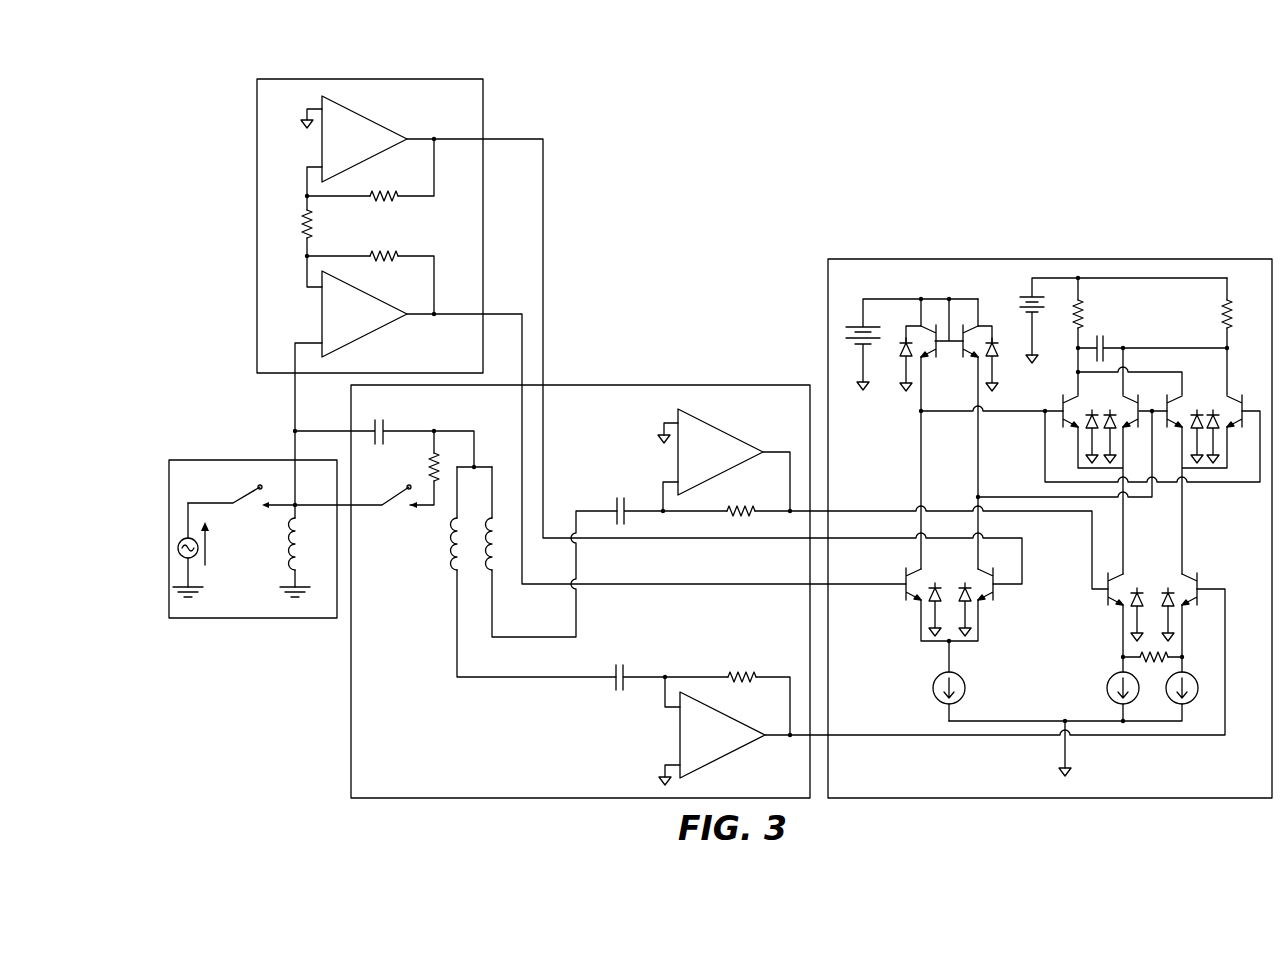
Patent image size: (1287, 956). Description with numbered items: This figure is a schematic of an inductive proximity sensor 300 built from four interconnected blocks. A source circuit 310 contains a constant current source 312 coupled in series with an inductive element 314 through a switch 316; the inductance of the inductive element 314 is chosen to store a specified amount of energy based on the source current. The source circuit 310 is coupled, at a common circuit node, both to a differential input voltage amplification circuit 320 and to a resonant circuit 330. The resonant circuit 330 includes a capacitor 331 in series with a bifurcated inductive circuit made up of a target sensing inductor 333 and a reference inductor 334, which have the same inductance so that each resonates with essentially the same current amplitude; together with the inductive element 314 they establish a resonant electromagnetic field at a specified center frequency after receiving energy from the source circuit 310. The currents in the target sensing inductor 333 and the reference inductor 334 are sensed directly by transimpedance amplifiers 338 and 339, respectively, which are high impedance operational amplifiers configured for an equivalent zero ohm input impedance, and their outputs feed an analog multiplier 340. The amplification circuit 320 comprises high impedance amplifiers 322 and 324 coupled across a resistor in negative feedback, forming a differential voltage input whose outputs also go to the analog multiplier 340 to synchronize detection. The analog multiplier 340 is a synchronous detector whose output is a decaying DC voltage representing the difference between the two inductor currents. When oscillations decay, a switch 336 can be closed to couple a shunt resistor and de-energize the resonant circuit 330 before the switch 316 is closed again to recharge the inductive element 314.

The proximity sensor 300 is at (703, 438).
The source circuit 310 is at (253, 522).
The constant current source 312 is at (172, 550).
The inductive element 314 is at (307, 551).
The switch 316 is at (241, 487).
The differential input voltage amplification circuit 320 is at (350, 226).
The high impedance amplifier 322 is at (365, 137).
The high impedance amplifier 324 is at (365, 314).
The resonant circuit 330 is at (580, 576).
The capacitor 331 is at (384, 429).
The target sensing inductor 333 is at (521, 572).
The reference inductor 334 is at (539, 552).
The switch 336 is at (356, 487).
The transimpedance amplifier 338 is at (724, 456).
The transimpedance amplifier 339 is at (712, 731).
The analog multiplier 340 is at (1050, 513).